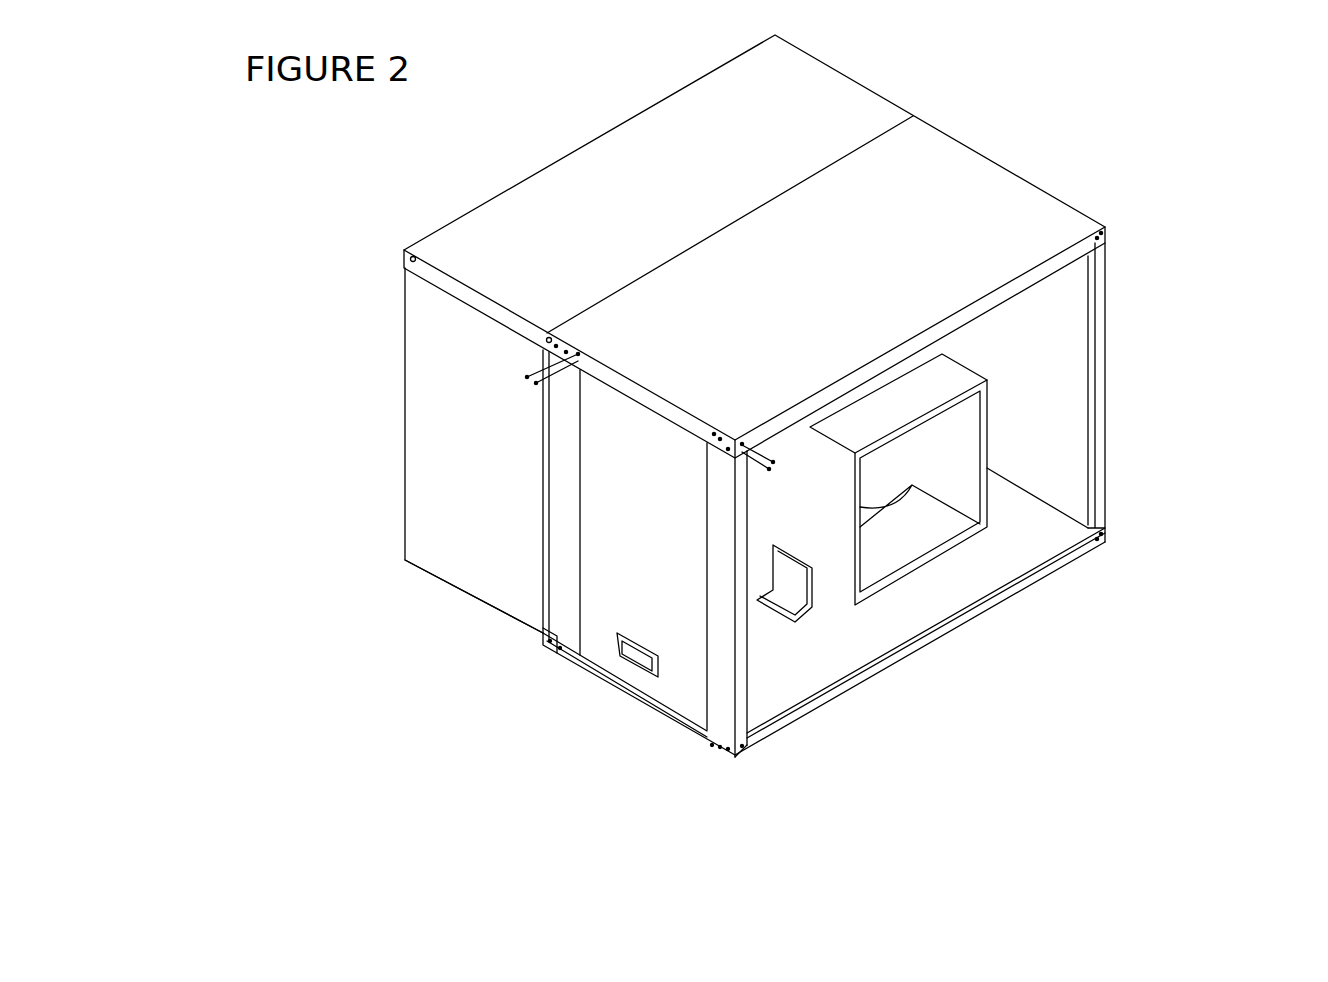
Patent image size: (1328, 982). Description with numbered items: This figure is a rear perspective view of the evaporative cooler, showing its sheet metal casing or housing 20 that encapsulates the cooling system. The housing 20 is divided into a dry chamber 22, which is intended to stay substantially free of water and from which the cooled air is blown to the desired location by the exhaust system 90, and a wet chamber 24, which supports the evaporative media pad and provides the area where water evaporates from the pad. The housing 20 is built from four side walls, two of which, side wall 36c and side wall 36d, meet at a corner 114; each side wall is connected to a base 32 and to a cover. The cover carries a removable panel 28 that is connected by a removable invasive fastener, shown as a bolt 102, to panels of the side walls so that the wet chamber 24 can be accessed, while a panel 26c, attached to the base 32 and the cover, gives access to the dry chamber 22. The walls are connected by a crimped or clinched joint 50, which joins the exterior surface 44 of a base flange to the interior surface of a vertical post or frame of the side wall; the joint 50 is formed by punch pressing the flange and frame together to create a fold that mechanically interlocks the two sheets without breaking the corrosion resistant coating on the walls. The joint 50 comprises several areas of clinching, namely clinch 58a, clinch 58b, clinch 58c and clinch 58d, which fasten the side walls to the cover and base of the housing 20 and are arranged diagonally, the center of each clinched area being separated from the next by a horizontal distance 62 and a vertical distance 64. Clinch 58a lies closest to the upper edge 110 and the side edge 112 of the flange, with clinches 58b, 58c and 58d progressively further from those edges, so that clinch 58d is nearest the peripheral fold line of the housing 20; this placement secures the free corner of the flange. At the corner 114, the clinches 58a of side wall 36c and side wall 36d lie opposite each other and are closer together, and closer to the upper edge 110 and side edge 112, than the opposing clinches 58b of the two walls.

The housing 20 is at (1210, 160).
The dry chamber 22 is at (1022, 152).
The wet chamber 24 is at (870, 55).
The removable panel 28 is at (880, 92).
The panel 26c is at (405, 440).
The base 32 is at (872, 638).
The side wall 36c is at (415, 688).
The side wall 36d is at (1025, 683).
The exterior surface 44 is at (453, 680).
The joint 50 is at (592, 335).
The clinch 58a is at (733, 740).
The clinch 58b is at (548, 645).
The clinch 58c is at (547, 643).
The clinch 58d is at (557, 648).
The horizontal distance 62 is at (537, 382).
The vertical distance 64 is at (773, 468).
The exhaust system 90 is at (982, 358).
The bolt 102 is at (414, 258).
The upper edge 110 is at (580, 600).
The side edge 112 is at (543, 636).
The corner 114 is at (722, 768).